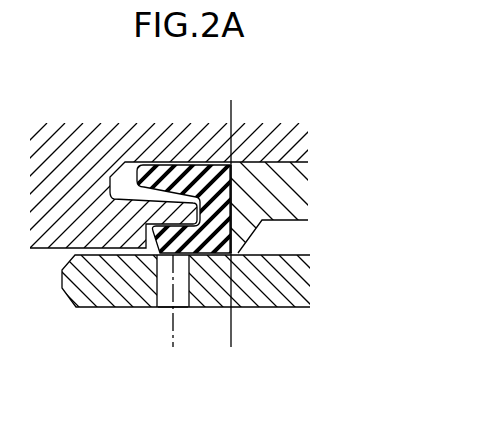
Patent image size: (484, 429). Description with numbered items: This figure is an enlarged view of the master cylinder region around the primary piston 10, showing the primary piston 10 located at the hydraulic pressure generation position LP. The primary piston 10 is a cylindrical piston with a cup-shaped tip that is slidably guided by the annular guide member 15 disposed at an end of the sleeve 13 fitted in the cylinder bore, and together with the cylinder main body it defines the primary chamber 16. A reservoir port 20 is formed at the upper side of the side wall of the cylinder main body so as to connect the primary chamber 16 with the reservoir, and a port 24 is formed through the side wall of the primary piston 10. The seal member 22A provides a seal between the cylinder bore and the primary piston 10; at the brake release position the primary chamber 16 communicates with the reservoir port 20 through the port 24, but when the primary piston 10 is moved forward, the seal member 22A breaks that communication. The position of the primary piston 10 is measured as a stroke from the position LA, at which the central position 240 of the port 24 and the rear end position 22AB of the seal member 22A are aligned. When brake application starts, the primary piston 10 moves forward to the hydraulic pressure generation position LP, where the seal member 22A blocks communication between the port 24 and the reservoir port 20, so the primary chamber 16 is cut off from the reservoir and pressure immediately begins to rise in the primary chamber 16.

The sleeve 13 is at (93, 138).
The seal member 22A is at (198, 167).
The rear end position of the seal member 22AB is at (233, 123).
The annular guide member 15 is at (300, 191).
The reservoir port 20 is at (298, 239).
The primary piston 10 is at (298, 284).
The primary chamber 16 is at (58, 333).
The port 24 is at (164, 300).
The central position of the port 240 is at (170, 323).
The hydraulic pressure generation position LP is at (173, 332).
The position LA is at (232, 332).